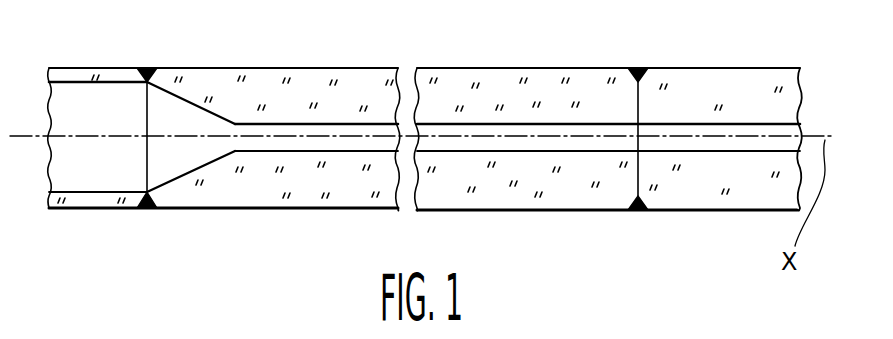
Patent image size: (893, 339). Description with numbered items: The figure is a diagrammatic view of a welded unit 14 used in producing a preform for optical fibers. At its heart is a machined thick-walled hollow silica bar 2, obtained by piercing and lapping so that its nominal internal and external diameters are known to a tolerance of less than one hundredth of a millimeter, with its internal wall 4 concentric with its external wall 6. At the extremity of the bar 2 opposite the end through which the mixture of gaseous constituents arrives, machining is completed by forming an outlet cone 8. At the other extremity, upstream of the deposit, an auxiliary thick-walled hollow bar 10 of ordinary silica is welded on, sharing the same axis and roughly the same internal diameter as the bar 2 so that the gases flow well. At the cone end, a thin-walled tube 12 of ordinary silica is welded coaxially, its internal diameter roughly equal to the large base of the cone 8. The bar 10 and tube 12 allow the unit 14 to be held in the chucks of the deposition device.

The thick-walled hollow silica bar 2 is at (545, 85).
The internal wall 4 is at (575, 150).
The external wall 6 is at (324, 68).
The outlet cone 8 is at (203, 164).
The auxiliary thick-walled hollow bar 10 is at (735, 87).
The thin-walled tube 12 is at (116, 75).
The welded unit 14 is at (330, 243).